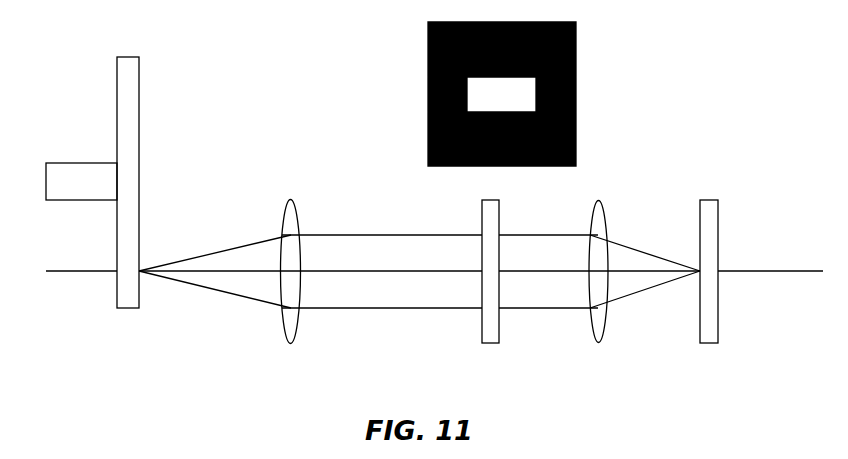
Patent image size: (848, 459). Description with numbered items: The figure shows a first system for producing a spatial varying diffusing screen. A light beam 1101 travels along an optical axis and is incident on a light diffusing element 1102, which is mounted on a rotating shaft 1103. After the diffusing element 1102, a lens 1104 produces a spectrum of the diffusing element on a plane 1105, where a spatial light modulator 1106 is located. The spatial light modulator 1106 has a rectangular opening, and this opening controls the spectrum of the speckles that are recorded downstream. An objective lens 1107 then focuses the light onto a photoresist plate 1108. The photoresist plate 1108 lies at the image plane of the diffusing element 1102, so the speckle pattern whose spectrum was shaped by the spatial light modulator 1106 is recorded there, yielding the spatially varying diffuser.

The light beam 1101 is at (105, 273).
The light diffusing element 1102 is at (140, 78).
The rotating shaft 1103 is at (97, 162).
The lens 1104 is at (283, 333).
The plane 1105 is at (480, 338).
The spatial light modulator 1106 is at (428, 77).
The objective lens 1107 is at (590, 333).
The photoresist plate 1108 is at (707, 200).